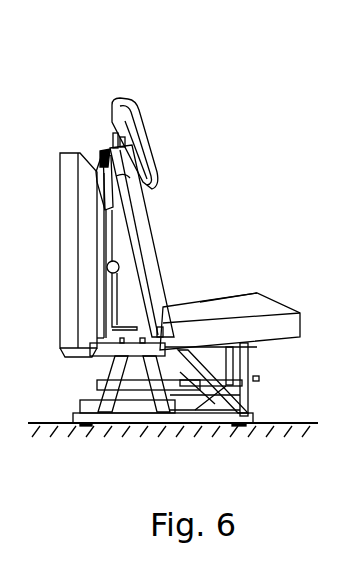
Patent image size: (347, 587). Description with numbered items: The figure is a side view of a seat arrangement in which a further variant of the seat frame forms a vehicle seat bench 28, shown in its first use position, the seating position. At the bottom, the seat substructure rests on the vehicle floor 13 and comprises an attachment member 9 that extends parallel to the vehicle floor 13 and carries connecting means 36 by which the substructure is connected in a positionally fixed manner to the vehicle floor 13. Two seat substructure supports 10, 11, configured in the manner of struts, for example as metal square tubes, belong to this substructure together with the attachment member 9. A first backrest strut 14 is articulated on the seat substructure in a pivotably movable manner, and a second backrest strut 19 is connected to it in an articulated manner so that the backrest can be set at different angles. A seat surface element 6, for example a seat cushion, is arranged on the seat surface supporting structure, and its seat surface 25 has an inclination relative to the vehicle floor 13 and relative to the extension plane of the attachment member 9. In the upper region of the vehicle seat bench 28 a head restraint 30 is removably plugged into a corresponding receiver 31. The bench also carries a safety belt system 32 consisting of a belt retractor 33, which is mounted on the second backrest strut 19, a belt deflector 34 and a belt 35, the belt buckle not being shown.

The seat surface element 6 is at (272, 306).
The attachment member 9 is at (100, 382).
The seat substructure support 10 is at (248, 356).
The seat substructure support 11 is at (97, 400).
The vehicle floor 13 is at (298, 428).
The first backrest strut 14 is at (167, 380).
The second backrest strut 19 is at (156, 262).
The seat surface 25 is at (239, 298).
The vehicle seat bench 28 is at (127, 462).
The head restraint 30 is at (116, 99).
The receiver 31 is at (105, 150).
The safety belt system 32 is at (79, 105).
The belt retractor 33 is at (105, 270).
The belt deflector 34 is at (99, 153).
The belt 35 is at (130, 178).
The connecting means 36 is at (88, 427).